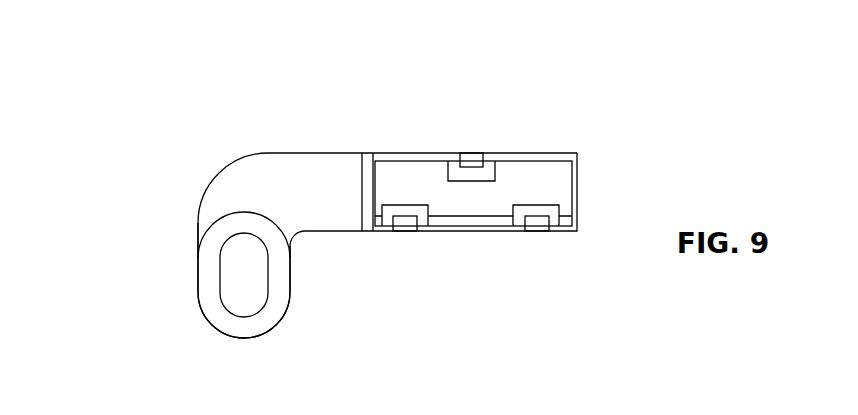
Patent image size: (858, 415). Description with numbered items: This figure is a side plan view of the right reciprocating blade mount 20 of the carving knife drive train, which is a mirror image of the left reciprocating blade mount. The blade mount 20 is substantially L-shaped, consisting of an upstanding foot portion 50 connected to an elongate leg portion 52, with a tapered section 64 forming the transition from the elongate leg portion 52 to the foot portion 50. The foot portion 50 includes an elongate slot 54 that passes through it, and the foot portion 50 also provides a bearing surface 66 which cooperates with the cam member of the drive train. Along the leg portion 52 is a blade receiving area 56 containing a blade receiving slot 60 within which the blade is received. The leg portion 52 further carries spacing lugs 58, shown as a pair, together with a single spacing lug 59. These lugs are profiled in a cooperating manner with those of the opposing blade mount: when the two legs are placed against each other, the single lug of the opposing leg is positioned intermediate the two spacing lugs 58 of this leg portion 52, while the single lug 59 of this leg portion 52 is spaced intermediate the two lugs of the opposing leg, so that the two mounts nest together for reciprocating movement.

The reciprocating blade mount 20 is at (454, 247).
The upstanding foot portion 50 is at (223, 337).
The elongate leg portion 52 is at (359, 233).
The elongate slot 54 is at (218, 282).
The blade receiving area 56 is at (562, 167).
The spacing lugs 58 is at (403, 226).
The spacing lug 59 is at (470, 156).
The blade receiving slot 60 is at (566, 221).
The tapered section 64 is at (308, 166).
The bearing surface 66 is at (212, 259).